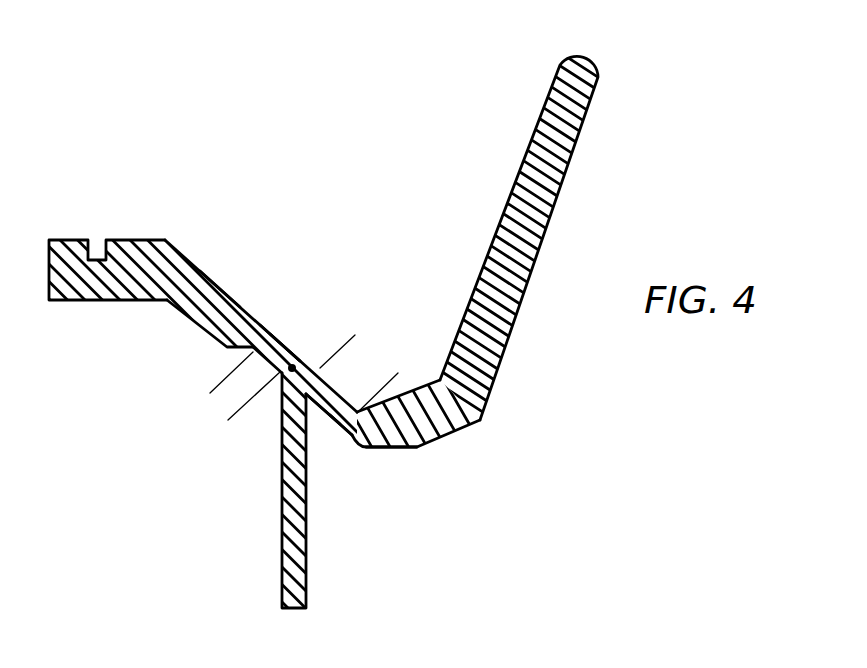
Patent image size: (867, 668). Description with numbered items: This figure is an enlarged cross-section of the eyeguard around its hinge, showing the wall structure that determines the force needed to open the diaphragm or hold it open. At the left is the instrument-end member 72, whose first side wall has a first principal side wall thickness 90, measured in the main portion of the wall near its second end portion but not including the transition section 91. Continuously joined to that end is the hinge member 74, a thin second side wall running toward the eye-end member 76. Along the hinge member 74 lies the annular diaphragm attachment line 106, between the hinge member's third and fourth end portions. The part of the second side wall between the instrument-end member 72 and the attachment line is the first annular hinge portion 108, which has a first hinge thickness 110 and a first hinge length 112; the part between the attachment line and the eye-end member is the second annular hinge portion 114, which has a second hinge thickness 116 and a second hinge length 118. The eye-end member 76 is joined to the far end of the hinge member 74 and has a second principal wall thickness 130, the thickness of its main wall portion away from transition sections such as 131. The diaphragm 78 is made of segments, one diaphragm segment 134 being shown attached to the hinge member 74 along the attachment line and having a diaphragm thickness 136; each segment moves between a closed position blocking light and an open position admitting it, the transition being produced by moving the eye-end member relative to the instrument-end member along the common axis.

The instrument-end member 72 is at (185, 191).
The hinge member 74 is at (335, 190).
The eye-end member 76 is at (463, 181).
The diaphragm 78 is at (484, 527).
The first principal side wall thickness 90 is at (192, 324).
The transition section 91 is at (230, 328).
The annular diaphragm attachment line 106 is at (298, 367).
The first annular hinge portion 108 is at (287, 334).
The first hinge thickness 110 is at (283, 342).
The first hinge length 112 is at (264, 361).
The second annular hinge portion 114 is at (338, 419).
The second hinge thickness 116 is at (322, 411).
The second hinge length 118 is at (388, 379).
The second principal wall thickness 130 is at (418, 350).
The transition section 131 is at (392, 447).
The diaphragm segment 134 is at (306, 585).
The diaphragm thickness 136 is at (348, 522).